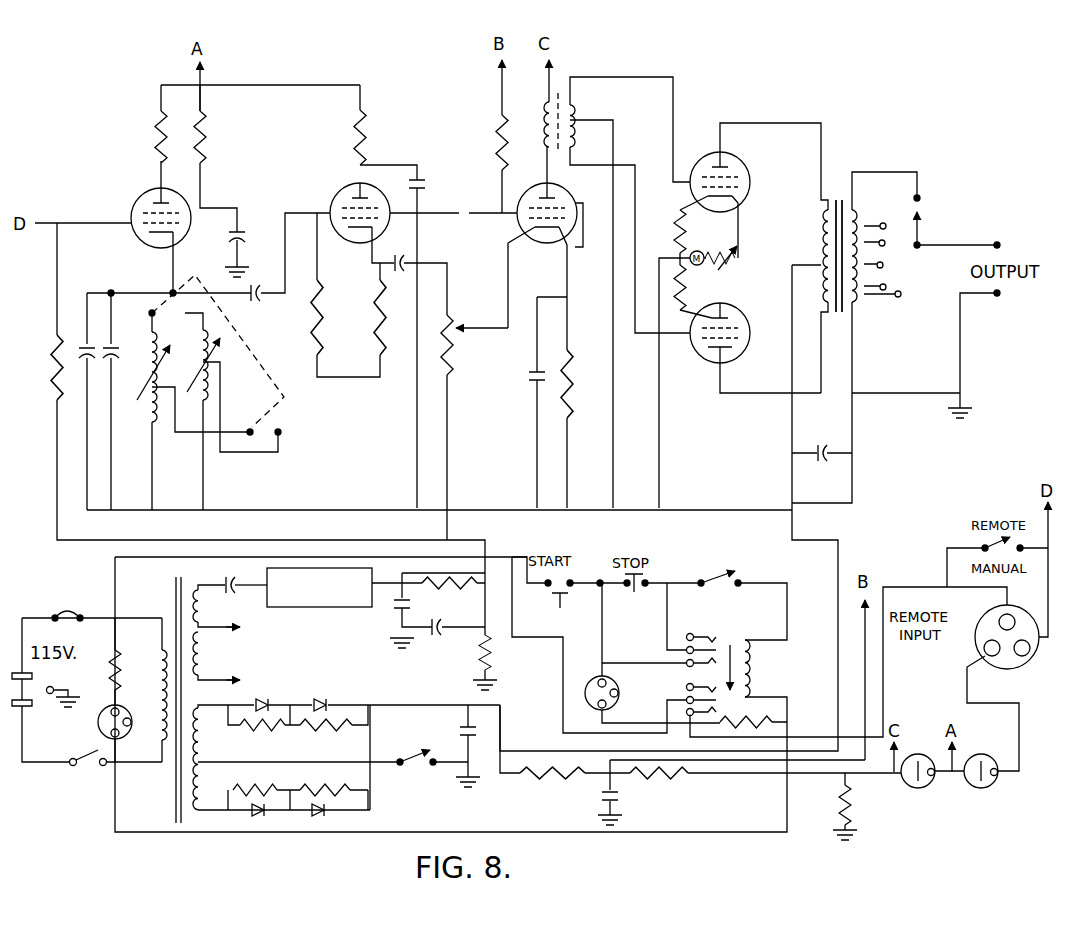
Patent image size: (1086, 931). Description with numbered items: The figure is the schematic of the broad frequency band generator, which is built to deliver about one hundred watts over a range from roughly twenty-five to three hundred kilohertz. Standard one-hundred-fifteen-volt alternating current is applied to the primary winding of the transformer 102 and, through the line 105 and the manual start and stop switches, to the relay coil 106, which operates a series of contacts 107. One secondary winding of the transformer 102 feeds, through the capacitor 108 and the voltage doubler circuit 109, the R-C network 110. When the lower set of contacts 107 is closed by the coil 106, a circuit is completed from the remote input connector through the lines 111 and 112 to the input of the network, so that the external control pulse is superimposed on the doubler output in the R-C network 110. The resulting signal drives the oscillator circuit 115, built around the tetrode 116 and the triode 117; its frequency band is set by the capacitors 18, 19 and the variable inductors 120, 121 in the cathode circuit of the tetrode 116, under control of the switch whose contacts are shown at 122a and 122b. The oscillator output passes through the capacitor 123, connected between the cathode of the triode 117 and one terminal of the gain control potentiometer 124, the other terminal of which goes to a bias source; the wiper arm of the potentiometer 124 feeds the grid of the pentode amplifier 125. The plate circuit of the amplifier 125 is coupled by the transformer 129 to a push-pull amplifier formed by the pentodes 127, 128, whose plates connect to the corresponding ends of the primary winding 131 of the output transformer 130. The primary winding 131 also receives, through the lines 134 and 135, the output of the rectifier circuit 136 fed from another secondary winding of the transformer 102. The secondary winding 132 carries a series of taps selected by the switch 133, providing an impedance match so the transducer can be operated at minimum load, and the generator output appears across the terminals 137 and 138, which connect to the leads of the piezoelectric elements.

The capacitor 18 is at (86, 345).
The capacitor 19 is at (110, 345).
The transformer 102 is at (172, 603).
The line 105 is at (510, 552).
The relay coil 106 is at (757, 669).
The contacts 107 is at (705, 672).
The capacitor 108 is at (225, 586).
The voltage doubler circuit 109 is at (295, 608).
The R-C network 110 is at (457, 612).
The line 111 is at (886, 655).
The line 112 is at (563, 672).
The oscillator circuit 115 is at (282, 167).
The tetrode 116 is at (137, 195).
The triode 117 is at (347, 244).
The variable inductor 120 is at (150, 382).
The variable inductor 121 is at (204, 372).
The switch contact 122a is at (152, 310).
The switch contact 122b is at (252, 430).
The capacitor 123 is at (396, 258).
The gain control potentiometer 124 is at (452, 348).
The pentode amplifier 125 is at (547, 245).
The pentode 127 is at (748, 170).
The pentode 128 is at (746, 318).
The transformer 129 is at (563, 84).
The transformer 130 is at (840, 185).
The primary winding 131 is at (816, 230).
The secondary winding 132 is at (866, 215).
The switch 133 is at (918, 236).
The line 134 is at (790, 525).
The line 135 is at (412, 705).
The rectifier circuit 136 is at (306, 785).
The terminal 137 is at (998, 245).
The terminal 138 is at (998, 295).